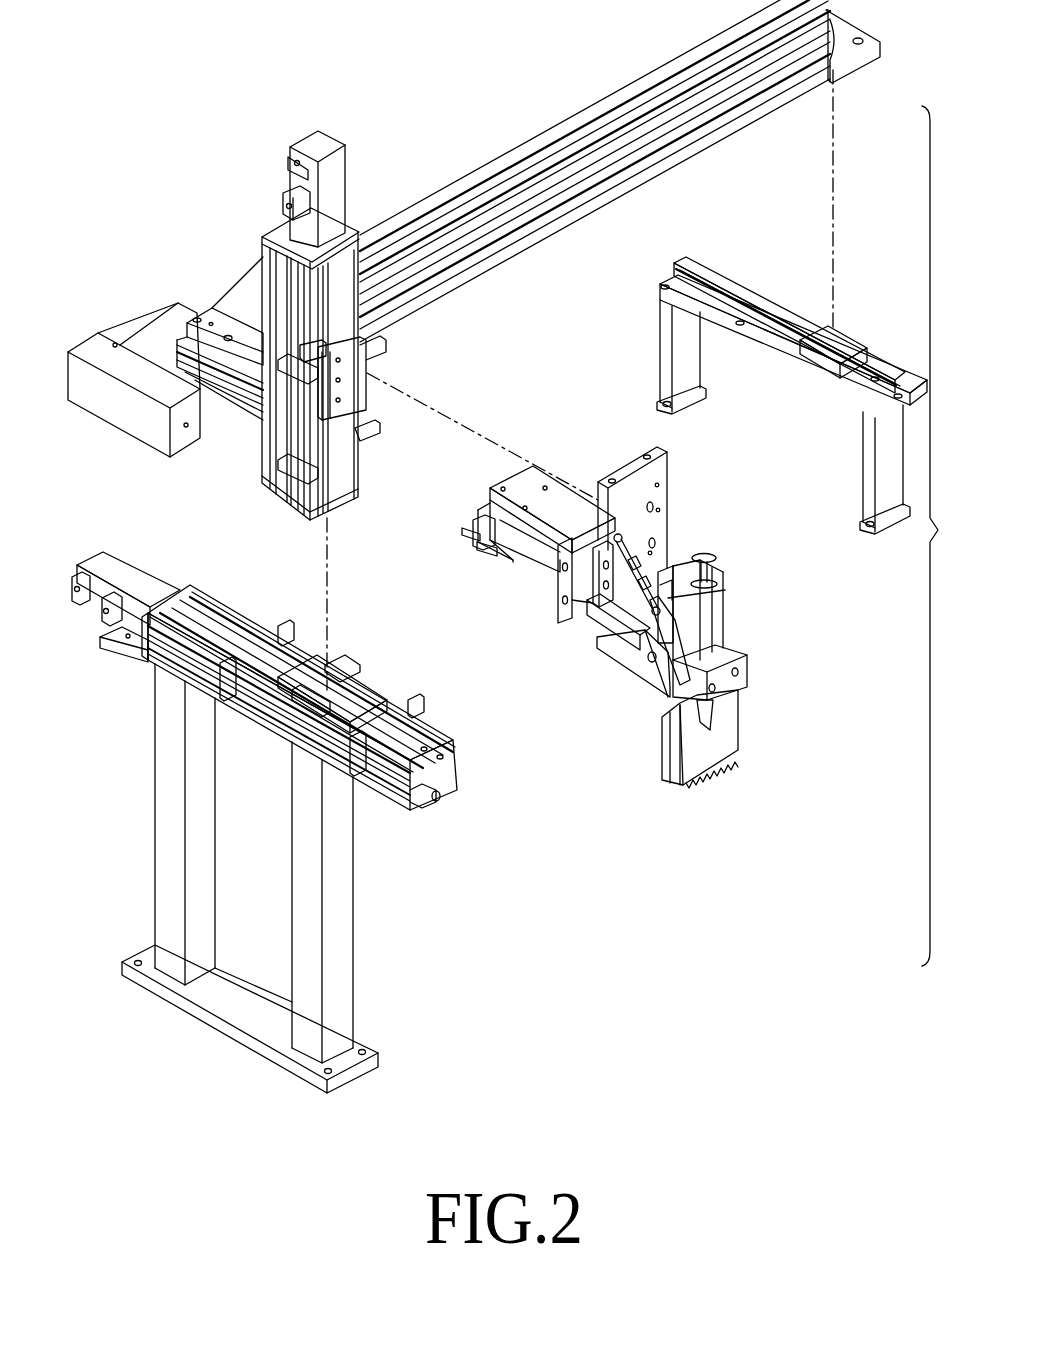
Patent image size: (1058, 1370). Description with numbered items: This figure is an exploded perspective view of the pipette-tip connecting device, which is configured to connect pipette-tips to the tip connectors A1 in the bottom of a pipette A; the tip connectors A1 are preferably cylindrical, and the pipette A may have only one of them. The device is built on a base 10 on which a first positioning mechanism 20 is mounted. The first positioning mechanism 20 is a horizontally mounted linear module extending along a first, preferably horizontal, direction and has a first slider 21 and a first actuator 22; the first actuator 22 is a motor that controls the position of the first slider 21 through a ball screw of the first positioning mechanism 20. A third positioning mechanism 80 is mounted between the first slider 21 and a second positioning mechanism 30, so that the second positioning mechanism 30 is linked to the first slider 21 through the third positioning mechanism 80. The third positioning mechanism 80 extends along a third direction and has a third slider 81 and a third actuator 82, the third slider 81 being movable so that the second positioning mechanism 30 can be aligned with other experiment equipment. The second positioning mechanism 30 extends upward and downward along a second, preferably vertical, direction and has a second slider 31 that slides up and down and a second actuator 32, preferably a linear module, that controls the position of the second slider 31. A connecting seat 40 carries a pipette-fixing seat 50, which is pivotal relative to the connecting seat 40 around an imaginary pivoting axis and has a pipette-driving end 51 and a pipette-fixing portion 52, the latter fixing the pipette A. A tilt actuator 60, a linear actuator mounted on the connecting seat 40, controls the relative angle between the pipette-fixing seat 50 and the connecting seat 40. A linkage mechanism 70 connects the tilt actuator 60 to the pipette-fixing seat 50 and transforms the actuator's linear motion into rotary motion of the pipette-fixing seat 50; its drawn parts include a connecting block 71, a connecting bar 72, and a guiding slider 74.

The base 10 is at (148, 830).
The first positioning mechanism 20 is at (207, 582).
The first slider 21 is at (367, 695).
The first actuator 22 is at (110, 565).
The second positioning mechanism 30 is at (358, 218).
The second slider 31 is at (348, 396).
The second actuator 32 is at (340, 166).
The connecting seat 40 is at (682, 484).
The pipette-fixing seat 50 is at (680, 628).
The pipette-driving end 51 is at (712, 580).
The pipette-fixing portion 52 is at (731, 678).
The tilt actuator 60 is at (537, 575).
The linkage mechanism 70 is at (653, 561).
The connecting block 71 is at (595, 585).
The connecting bar 72 is at (628, 540).
The guiding slider 74 is at (518, 486).
The third positioning mechanism 80 is at (615, 88).
The third slider 81 is at (188, 326).
The third actuator 82 is at (146, 330).
The pipette A is at (721, 742).
The tip connector A1 is at (670, 782).